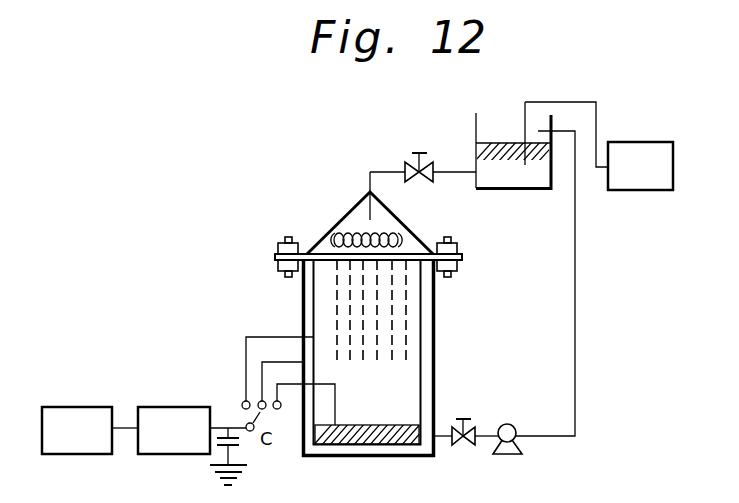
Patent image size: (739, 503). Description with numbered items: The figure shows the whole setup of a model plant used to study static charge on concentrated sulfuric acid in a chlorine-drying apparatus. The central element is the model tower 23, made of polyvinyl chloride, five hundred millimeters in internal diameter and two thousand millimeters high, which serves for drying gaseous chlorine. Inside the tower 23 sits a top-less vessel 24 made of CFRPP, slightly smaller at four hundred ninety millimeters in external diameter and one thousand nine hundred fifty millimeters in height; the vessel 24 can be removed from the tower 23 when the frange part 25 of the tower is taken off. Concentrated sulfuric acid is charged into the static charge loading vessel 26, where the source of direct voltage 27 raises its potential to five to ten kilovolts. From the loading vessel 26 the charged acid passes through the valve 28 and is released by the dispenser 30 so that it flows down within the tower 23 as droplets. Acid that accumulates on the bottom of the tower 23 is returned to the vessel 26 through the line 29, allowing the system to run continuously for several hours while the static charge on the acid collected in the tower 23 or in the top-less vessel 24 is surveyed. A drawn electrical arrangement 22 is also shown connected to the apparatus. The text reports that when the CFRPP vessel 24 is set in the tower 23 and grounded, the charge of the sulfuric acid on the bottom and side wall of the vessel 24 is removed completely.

The power source 22 is at (173, 415).
The model tower 23 is at (435, 313).
The top-less vessel 24 is at (418, 363).
The frange part 25 is at (281, 253).
The static charge loading vessel 26 is at (528, 190).
The source of direct voltage 27 is at (650, 180).
The valve 28 is at (403, 165).
The line 29 is at (576, 377).
The dispenser 30 is at (350, 228).